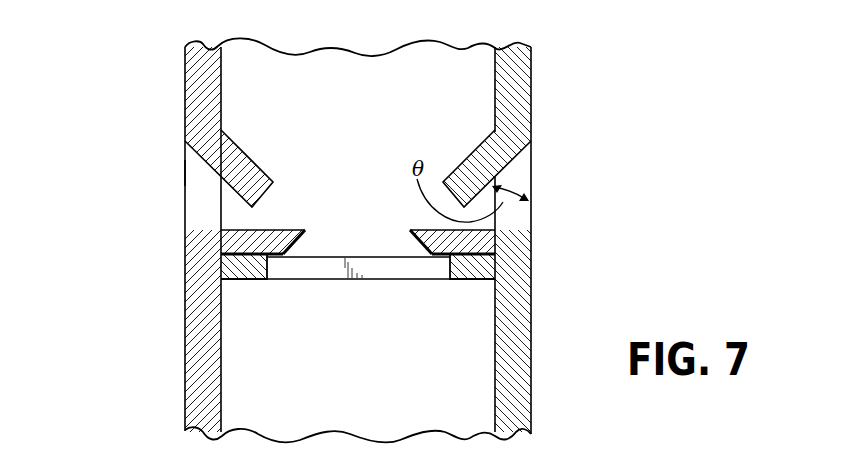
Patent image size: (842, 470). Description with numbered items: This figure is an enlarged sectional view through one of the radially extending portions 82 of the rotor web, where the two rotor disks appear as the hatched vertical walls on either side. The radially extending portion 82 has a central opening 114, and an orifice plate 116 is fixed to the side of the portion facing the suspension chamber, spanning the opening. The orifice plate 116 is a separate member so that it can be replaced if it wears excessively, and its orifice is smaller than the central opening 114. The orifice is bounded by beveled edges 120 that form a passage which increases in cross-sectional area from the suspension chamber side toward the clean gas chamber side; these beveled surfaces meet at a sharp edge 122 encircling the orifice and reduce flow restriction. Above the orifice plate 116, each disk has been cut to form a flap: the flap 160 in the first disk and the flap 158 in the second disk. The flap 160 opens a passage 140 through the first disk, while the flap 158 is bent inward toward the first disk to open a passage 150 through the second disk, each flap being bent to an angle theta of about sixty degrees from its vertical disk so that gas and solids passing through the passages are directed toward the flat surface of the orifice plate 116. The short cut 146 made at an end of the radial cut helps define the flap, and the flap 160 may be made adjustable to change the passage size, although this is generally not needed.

The radially extending portion 82 is at (240, 282).
The central opening 114 is at (308, 268).
The orifice plate 116 is at (252, 230).
The beveled edges 120 is at (420, 243).
The sharp edge 122 is at (296, 244).
The passage 140 is at (548, 188).
The short cut 146 is at (200, 190).
The passage 150 is at (180, 172).
The flap 158 is at (494, 178).
The adjustable flap 160 is at (192, 167).